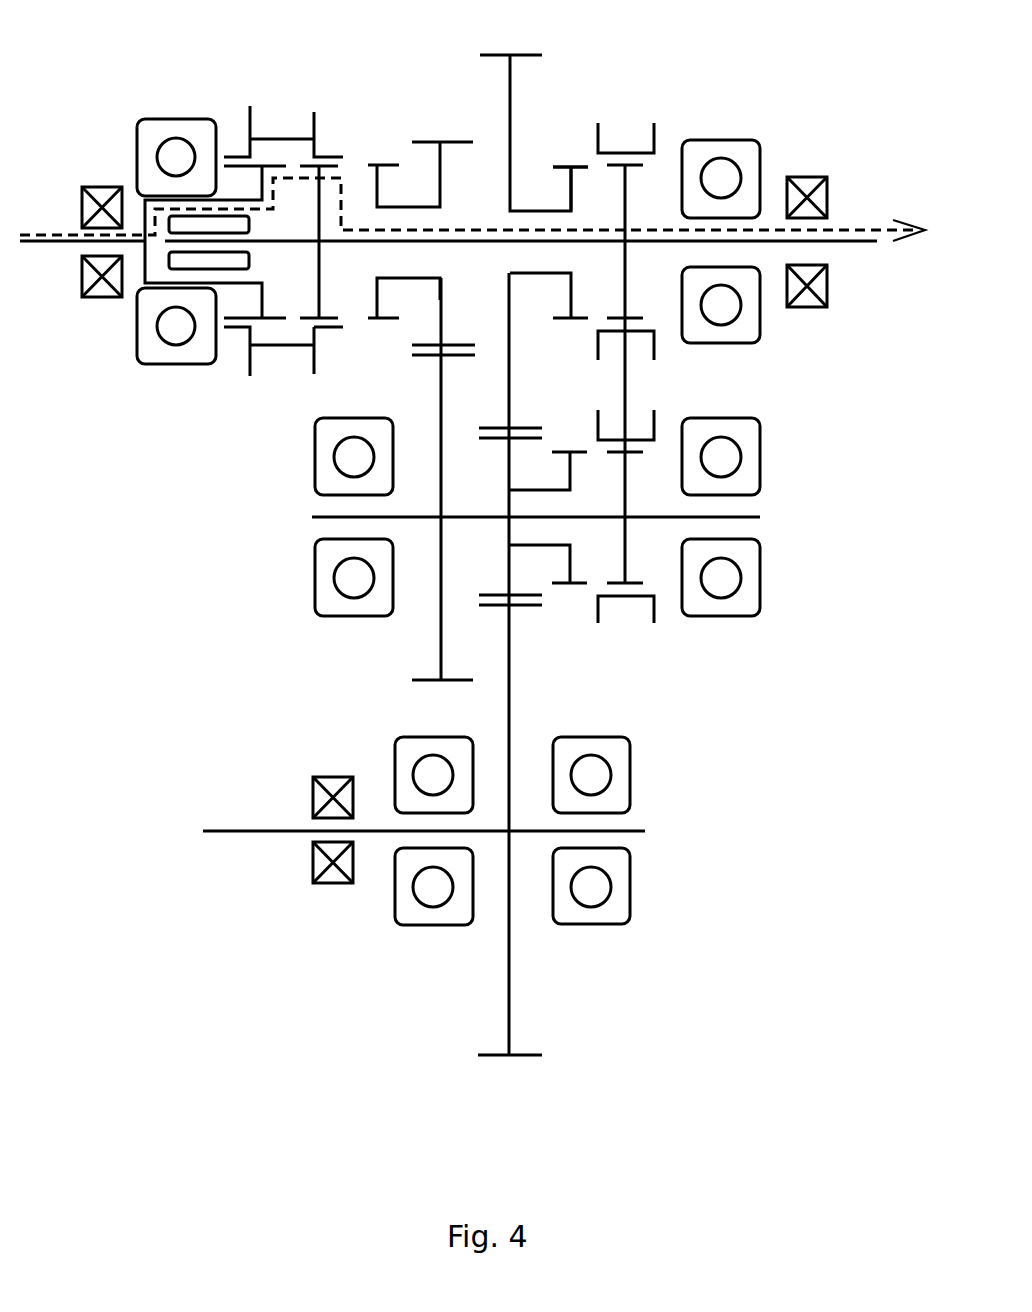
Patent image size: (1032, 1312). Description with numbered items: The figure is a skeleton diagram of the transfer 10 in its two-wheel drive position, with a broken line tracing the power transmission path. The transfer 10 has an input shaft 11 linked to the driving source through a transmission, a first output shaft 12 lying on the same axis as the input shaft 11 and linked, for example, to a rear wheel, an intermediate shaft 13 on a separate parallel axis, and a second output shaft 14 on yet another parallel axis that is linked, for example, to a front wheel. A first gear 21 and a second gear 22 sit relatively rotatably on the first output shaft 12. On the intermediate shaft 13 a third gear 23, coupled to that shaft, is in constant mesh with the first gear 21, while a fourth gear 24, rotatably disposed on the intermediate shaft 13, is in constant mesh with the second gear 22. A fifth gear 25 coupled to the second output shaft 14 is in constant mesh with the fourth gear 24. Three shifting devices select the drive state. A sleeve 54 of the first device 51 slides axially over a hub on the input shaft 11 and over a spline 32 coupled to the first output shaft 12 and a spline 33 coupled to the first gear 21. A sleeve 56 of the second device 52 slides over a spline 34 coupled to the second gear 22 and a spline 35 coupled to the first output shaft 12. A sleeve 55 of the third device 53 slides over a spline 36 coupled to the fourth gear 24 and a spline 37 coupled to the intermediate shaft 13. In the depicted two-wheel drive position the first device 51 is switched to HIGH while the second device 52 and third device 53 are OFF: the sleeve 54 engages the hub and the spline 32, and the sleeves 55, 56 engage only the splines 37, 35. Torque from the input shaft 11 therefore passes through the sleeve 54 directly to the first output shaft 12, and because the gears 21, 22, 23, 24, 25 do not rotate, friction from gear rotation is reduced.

The transfer 10 is at (840, 115).
The input shaft 11 is at (50, 243).
The first output shaft 12 is at (857, 243).
The intermediate shaft 13 is at (325, 518).
The second output shaft 14 is at (243, 832).
The first gear 21 is at (427, 142).
The second gear 22 is at (528, 55).
The third gear 23 is at (427, 681).
The fourth gear 24 is at (524, 440).
The fifth gear 25 is at (525, 1056).
The spline 32 is at (323, 165).
The spline 33 is at (385, 320).
The spline 34 is at (563, 166).
The spline 35 is at (630, 320).
The spline 36 is at (575, 585).
The spline 37 is at (632, 585).
The first device 51 is at (285, 103).
The second device 52 is at (653, 107).
The third device 53 is at (635, 652).
The sleeve 54 is at (247, 118).
The sleeve 55 is at (654, 612).
The sleeve 56 is at (656, 133).